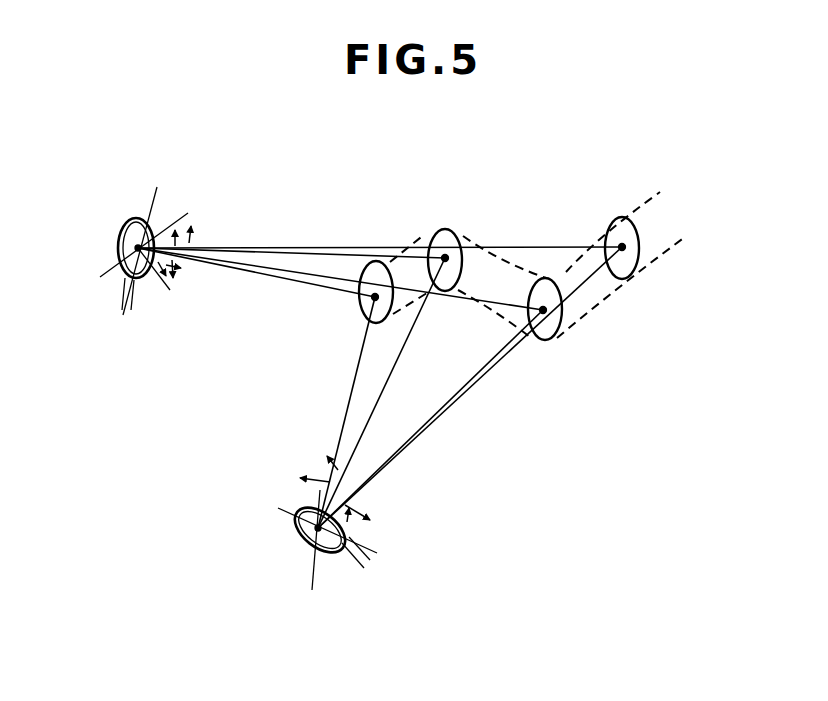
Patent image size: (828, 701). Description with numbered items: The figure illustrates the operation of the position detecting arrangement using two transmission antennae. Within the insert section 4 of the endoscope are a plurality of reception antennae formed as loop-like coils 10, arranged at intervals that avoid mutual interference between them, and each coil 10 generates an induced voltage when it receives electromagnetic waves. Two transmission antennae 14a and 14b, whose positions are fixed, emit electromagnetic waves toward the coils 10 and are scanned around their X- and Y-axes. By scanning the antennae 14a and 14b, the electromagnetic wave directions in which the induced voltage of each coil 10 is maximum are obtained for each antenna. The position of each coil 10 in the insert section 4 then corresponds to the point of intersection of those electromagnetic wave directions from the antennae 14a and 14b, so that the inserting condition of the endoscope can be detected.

The insert section 4 is at (636, 205).
The loop-like coils 10 is at (373, 265).
The transmission antenna 14a is at (119, 236).
The transmission antenna 14b is at (300, 544).